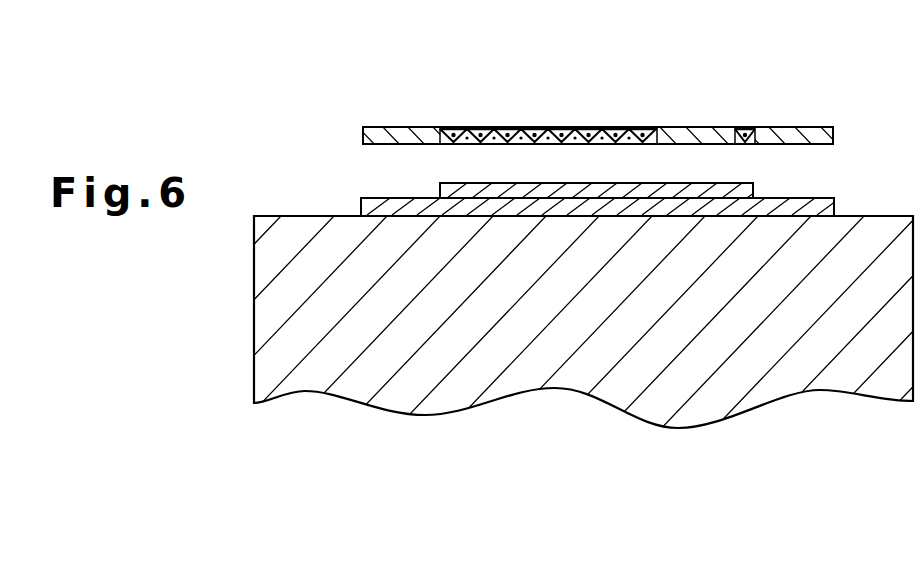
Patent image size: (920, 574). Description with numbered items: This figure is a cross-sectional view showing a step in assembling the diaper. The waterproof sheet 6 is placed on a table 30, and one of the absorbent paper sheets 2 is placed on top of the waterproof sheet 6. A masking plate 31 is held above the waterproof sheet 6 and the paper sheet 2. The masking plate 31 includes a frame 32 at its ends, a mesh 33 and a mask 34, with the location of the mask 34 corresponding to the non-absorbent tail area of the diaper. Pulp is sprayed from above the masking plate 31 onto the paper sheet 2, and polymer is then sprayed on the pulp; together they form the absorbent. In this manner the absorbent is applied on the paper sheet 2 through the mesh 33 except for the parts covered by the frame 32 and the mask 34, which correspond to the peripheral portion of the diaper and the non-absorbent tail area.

The absorbent paper sheet 2 is at (753, 190).
The waterproof sheet 6 is at (835, 208).
The table 30 is at (563, 350).
The masking plate 31 is at (623, 127).
The frame 32 is at (408, 128).
The mesh 33 is at (562, 128).
The mask 34 is at (698, 130).